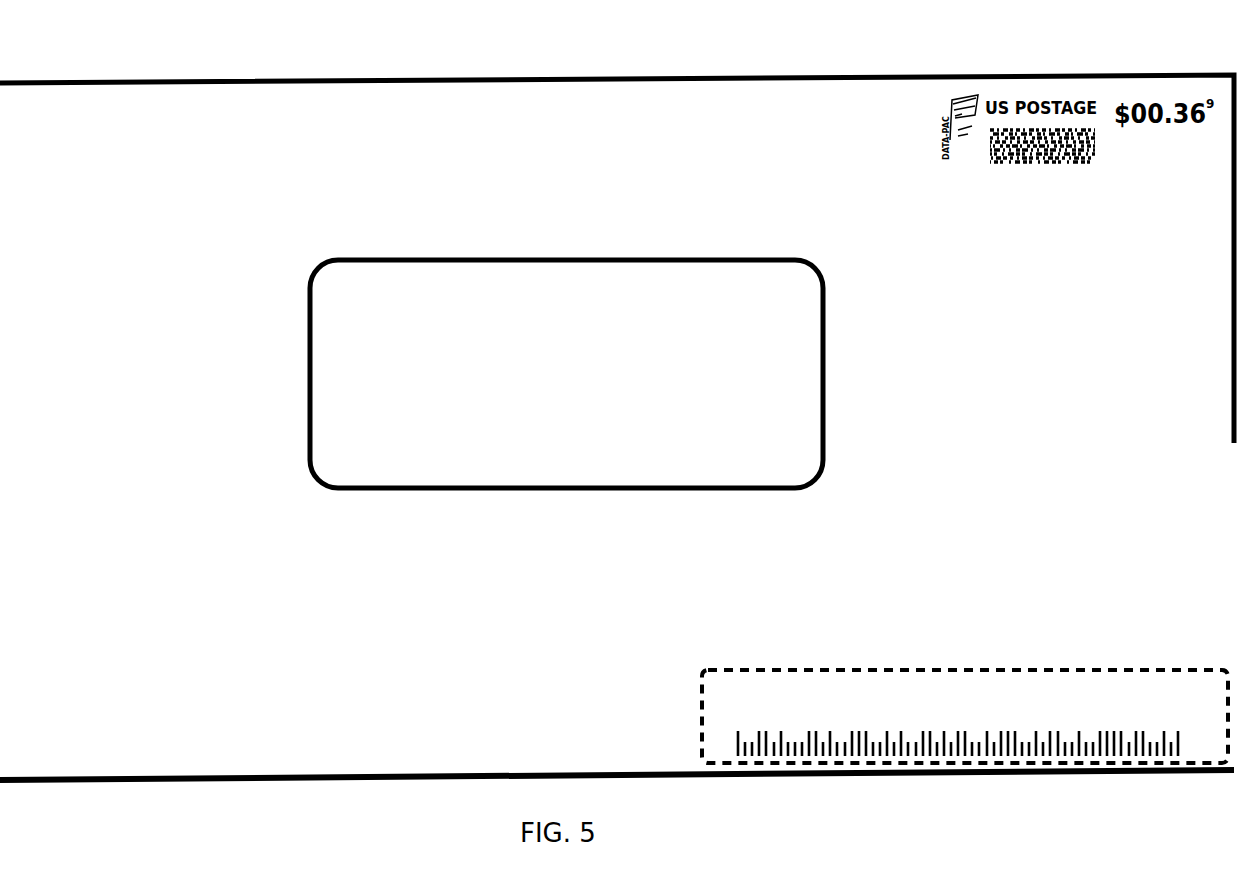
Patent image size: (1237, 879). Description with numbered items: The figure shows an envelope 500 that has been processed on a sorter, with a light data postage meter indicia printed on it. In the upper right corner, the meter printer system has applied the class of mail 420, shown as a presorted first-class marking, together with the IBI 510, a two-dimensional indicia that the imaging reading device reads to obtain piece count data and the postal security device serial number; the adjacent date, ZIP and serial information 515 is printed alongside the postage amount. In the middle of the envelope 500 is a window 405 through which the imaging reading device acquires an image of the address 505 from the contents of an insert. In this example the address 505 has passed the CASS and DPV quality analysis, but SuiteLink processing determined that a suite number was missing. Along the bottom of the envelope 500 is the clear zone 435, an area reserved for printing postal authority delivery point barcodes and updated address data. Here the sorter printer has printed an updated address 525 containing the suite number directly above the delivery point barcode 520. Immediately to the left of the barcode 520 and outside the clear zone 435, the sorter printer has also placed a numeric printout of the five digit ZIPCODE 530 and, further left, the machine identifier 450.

The envelope 500 is at (482, 71).
The class of mail 420 is at (810, 136).
The IBI 510 is at (1012, 160).
The postage date and zip information 515 is at (1160, 160).
The window 405 is at (825, 377).
The address 505 is at (417, 392).
The machine identifier 450 is at (535, 726).
The 5 digit ZIPCODE 530 is at (632, 725).
The clear zone 435 is at (714, 672).
The updated address 525 is at (845, 688).
The delivery point barcode 520 is at (1160, 717).